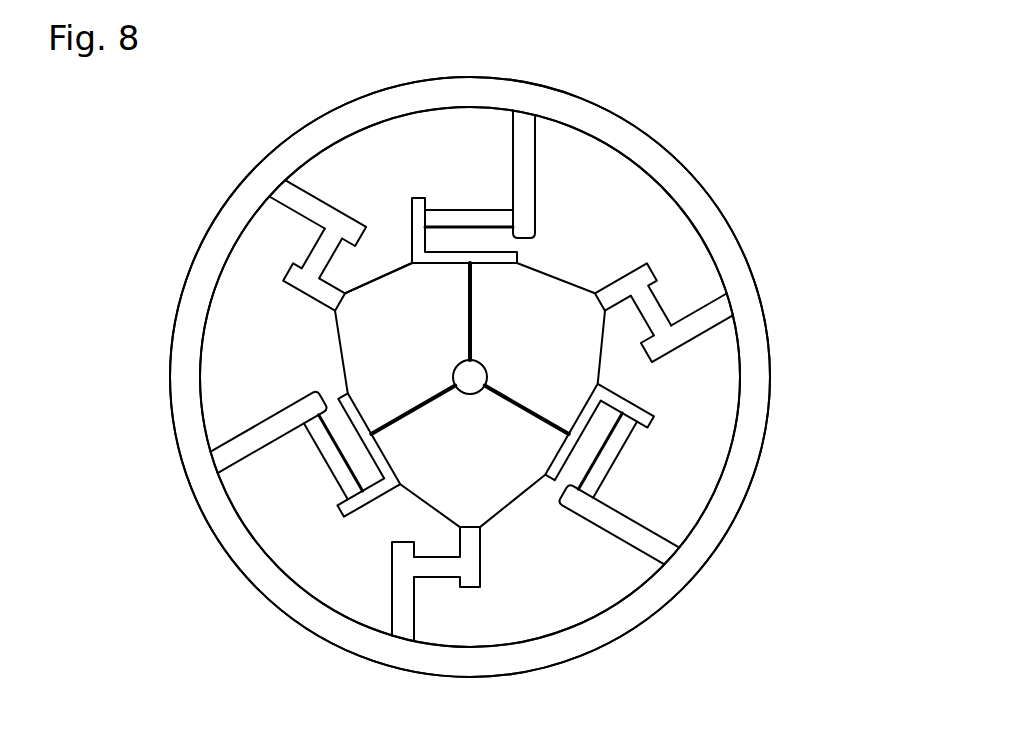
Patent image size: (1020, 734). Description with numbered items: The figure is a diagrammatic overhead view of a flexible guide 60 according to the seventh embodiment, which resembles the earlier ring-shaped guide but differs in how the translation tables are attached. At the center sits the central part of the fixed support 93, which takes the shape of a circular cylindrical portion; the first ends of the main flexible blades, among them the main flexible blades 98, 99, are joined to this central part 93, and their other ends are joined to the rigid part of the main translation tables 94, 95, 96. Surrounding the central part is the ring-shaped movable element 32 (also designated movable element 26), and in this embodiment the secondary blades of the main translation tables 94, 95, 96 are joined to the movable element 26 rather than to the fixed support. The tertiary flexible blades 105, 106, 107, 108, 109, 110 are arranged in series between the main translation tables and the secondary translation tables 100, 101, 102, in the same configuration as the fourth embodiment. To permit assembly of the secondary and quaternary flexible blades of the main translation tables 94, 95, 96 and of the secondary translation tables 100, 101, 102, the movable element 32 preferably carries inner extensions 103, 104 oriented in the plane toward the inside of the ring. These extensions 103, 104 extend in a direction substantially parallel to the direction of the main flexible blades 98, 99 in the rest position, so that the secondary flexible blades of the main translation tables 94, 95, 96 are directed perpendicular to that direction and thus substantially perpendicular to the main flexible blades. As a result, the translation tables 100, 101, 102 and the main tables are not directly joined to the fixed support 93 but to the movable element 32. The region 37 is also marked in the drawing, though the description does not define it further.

The movable element 26 is at (843, 243).
The movable element 32 is at (740, 470).
The web portion 37 is at (305, 390).
The flexible guide 60 is at (841, 90).
The central part of the fixed support 93 is at (455, 368).
The main translation table 94 is at (468, 186).
The main translation table 95 is at (632, 486).
The main translation table 96 is at (303, 477).
The main flexible blade 98 is at (473, 289).
The main flexible blade 99 is at (550, 528).
The secondary translation table 100 is at (296, 242).
The secondary translation table 101 is at (692, 294).
The secondary translation table 102 is at (428, 594).
The inner extension 103 is at (527, 177).
The inner extension 104 is at (315, 208).
The tertiary flexible blade 105 is at (410, 260).
The tertiary flexible blade 106 is at (577, 283).
The tertiary flexible blade 107 is at (603, 368).
The tertiary flexible blade 108 is at (515, 505).
The tertiary flexible blade 109 is at (405, 492).
The tertiary flexible blade 110 is at (337, 330).